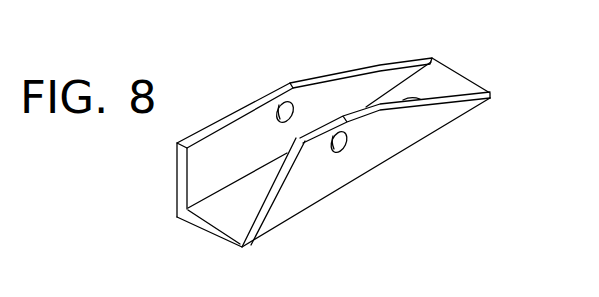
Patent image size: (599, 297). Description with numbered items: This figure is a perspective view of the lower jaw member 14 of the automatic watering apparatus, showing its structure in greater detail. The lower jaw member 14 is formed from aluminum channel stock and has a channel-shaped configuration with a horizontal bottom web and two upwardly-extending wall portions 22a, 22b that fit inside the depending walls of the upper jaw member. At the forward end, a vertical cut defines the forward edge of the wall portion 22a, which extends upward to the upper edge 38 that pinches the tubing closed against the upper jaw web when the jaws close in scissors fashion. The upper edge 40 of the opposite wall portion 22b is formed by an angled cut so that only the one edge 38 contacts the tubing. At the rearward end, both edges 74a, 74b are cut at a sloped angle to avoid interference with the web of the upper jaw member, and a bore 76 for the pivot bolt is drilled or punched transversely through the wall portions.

The lower jaw member 14 is at (432, 136).
The wall portion 22a is at (177, 183).
The wall portion 22b is at (330, 198).
The upper edge 38 is at (245, 108).
The upper edge 40 is at (264, 196).
The edge 74a is at (365, 63).
The edge 74b is at (452, 95).
The bore 76 is at (349, 147).